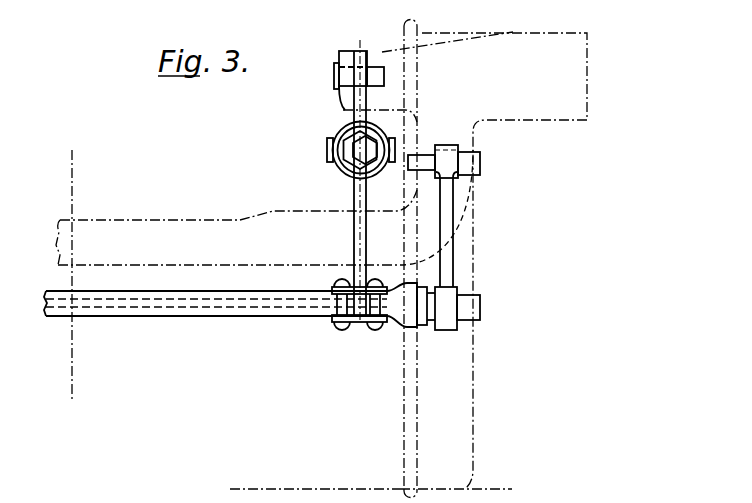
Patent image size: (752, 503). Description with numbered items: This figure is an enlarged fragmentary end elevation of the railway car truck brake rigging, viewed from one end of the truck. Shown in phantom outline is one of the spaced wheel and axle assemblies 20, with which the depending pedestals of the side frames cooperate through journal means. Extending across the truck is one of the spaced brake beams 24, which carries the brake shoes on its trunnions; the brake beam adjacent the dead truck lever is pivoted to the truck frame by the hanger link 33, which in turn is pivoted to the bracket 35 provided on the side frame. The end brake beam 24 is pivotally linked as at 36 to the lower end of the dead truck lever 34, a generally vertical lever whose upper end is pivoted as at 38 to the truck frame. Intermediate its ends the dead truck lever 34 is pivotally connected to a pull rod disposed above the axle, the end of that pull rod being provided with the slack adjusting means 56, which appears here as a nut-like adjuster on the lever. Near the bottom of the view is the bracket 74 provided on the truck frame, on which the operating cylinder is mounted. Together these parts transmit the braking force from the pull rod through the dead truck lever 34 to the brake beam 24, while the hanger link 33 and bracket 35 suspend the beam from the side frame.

The wheel and axle assembly 20 is at (470, 424).
The brake beam 24 is at (258, 314).
The hanger link 33 is at (450, 258).
The dead truck lever 34 is at (354, 190).
The bracket 35 is at (382, 55).
The pivot connection 36 is at (359, 314).
The pivot 38 is at (334, 73).
The slack adjusting means 56 is at (333, 150).
The bracket 74 is at (271, 493).